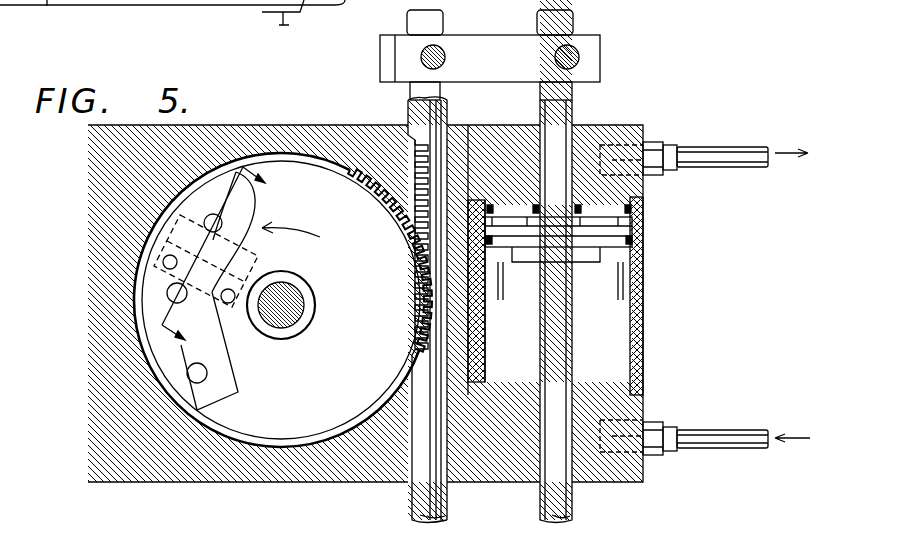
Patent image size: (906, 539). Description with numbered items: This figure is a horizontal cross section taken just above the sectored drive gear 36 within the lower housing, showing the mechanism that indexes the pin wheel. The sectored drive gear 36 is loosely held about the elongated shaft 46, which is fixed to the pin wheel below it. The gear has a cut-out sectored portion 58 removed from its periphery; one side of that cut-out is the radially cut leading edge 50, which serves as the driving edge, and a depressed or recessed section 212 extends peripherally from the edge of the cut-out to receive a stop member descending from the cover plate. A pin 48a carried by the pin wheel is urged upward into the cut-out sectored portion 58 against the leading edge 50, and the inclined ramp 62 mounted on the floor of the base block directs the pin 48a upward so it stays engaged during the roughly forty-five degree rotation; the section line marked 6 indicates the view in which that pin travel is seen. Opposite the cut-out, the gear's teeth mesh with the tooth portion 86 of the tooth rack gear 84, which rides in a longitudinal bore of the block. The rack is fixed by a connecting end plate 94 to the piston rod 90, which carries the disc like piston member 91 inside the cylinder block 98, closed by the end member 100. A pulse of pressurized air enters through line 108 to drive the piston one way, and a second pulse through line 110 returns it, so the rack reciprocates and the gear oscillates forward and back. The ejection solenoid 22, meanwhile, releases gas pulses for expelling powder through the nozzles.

The solenoid 22 is at (112, 2).
The sectored drive gear 36 is at (299, 152).
The depressed or recessed section 212 is at (213, 191).
The elongated shaft 46 is at (305, 305).
The ramp 62 is at (258, 262).
The leading edge 50 is at (178, 291).
The pin 48a is at (216, 332).
The cut-out sectored portion 58 is at (165, 354).
The section line 6- 6 is at (233, 253).
The tooth rack gear 84 is at (445, 266).
The tooth portion 86 is at (412, 160).
The connecting end plate 94 is at (483, 45).
The piston rod 90 is at (556, 336).
The disc like piston member 91 is at (509, 248).
The cylinder block 98 is at (640, 299).
The end member 100 is at (598, 476).
The line 110 is at (724, 162).
The line 108 is at (720, 440).